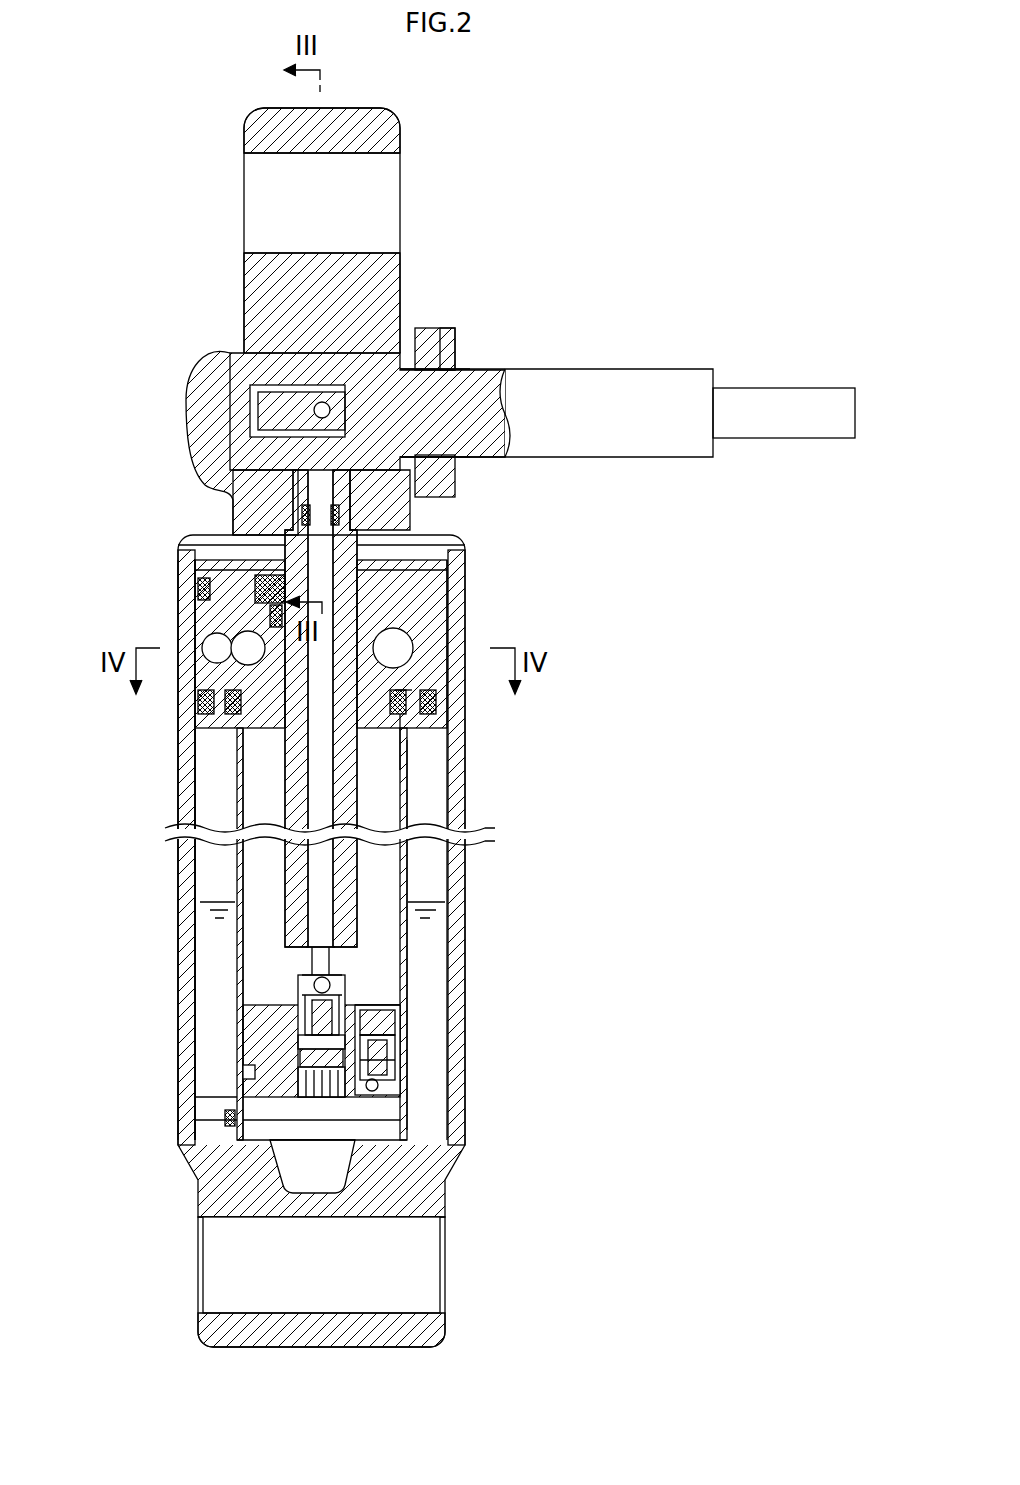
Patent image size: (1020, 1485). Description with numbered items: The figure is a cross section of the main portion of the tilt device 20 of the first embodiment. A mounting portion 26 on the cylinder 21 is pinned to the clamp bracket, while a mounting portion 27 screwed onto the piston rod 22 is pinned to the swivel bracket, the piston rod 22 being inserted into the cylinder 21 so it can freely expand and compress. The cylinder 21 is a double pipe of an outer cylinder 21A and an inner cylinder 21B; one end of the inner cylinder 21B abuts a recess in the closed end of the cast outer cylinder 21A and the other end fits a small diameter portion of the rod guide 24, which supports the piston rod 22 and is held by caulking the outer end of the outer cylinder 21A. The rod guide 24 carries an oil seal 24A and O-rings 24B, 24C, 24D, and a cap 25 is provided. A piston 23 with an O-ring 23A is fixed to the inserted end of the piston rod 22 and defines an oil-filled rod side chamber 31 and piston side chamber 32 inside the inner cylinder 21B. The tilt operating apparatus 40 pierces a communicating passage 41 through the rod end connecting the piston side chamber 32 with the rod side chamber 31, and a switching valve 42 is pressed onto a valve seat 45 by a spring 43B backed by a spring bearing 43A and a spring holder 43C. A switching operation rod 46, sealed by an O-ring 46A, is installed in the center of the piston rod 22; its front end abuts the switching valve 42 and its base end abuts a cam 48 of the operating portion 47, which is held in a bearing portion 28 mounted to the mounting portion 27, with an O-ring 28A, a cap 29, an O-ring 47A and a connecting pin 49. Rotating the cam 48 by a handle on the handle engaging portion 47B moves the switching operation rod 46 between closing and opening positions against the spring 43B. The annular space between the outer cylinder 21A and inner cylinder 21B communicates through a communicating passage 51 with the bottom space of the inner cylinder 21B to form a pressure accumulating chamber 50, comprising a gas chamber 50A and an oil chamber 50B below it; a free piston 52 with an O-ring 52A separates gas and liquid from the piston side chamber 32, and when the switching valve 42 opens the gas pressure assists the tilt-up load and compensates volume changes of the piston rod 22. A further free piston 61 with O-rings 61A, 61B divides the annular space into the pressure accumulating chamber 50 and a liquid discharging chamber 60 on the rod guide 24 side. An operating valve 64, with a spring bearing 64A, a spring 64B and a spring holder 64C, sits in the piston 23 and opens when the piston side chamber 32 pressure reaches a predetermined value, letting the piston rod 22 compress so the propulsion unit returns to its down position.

The tilt device 20 is at (135, 222).
The cylinder 21 is at (275, 840).
The outer cylinder 21A is at (245, 805).
The inner cylinder 21B is at (243, 835).
The piston rod 22 is at (440, 800).
The piston 23 is at (320, 1027).
The O-ring 23A is at (255, 1042).
The rod guide 24 is at (314, 633).
The oil seal 24A is at (230, 568).
The O-ring 24B is at (200, 592).
The O-ring 24C is at (274, 618).
The O-ring 24D is at (240, 705).
The cap 25 is at (258, 582).
The mounting portion 26 is at (210, 1325).
The mounting portion 27 is at (262, 130).
The bearing portion 28 is at (230, 350).
The O-ring 28A is at (405, 355).
The cap 29 is at (450, 330).
The rod side chamber 31 is at (386, 838).
The piston side chamber 32 is at (345, 1125).
The tilt operating apparatus 40 is at (627, 371).
The communicating passage 41 is at (330, 985).
The switching valve 42 is at (340, 972).
The spring bearing 43A is at (245, 1080).
The spring 43B is at (270, 1040).
The spring holder 43C is at (298, 1000).
The valve seat 45 is at (300, 980).
The switching operation rod 46 is at (411, 708).
The O-ring 46A is at (340, 512).
The operating portion 47 is at (565, 369).
The O-ring 47A is at (455, 378).
The handle engaging portion 47B is at (790, 388).
The cam 48 is at (290, 448).
The connecting pin 49 is at (332, 412).
The pressure accumulating chamber 50 is at (311, 934).
The gas chamber 50A is at (212, 862).
The oil chamber 50B is at (200, 888).
The communicating passage 51 is at (200, 1118).
The free piston 52 is at (367, 1175).
The O-ring 52A is at (375, 1120).
The liquid discharging chamber 60 is at (432, 698).
The free piston 61 is at (473, 744).
The O-ring 61A is at (405, 712).
The O-ring 61B is at (405, 770).
The operating valve 64 is at (455, 1046).
The spring bearing 64A is at (390, 1015).
The spring 64B is at (395, 1050).
The spring holder 64C is at (390, 1060).